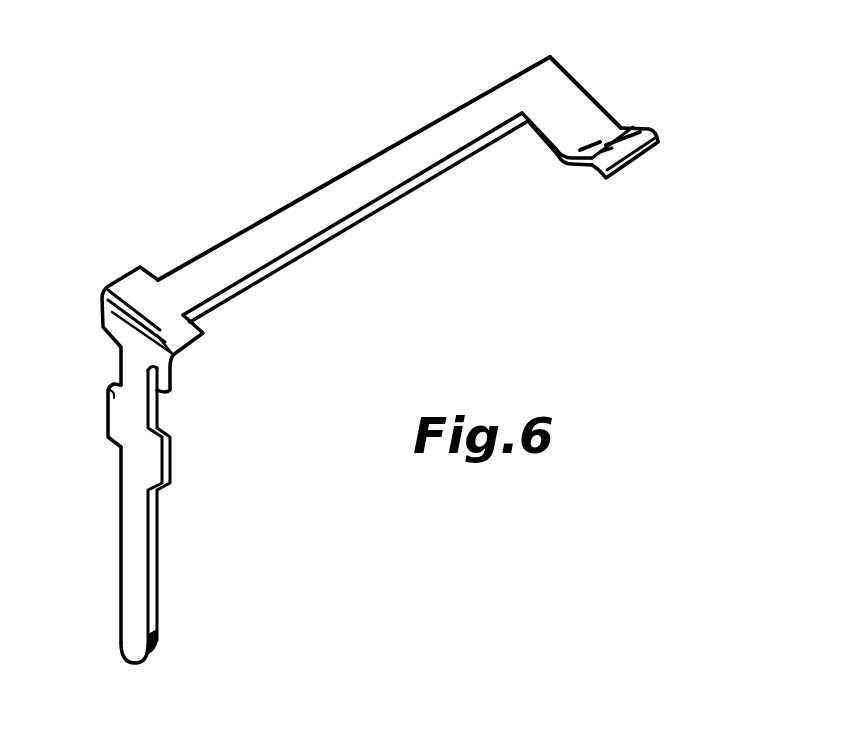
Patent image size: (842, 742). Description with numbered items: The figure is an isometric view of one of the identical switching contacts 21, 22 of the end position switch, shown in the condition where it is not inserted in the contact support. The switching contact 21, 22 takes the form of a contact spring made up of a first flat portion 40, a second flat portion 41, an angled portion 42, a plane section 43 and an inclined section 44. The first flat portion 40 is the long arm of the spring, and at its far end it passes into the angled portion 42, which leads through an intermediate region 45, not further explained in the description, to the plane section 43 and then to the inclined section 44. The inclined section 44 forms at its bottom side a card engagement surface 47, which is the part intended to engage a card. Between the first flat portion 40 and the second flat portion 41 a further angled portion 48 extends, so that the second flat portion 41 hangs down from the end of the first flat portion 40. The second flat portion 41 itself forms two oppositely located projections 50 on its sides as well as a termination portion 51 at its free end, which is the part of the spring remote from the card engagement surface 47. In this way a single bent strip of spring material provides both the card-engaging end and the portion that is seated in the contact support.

The contact element 21 is at (373, 360).
The contact element 22 is at (307, 186).
The arm 40 is at (277, 267).
The pin / terminal leg 41 is at (118, 535).
The bent end portion 42 is at (593, 93).
The contact hook 43 is at (563, 136).
The contact tab 44 is at (637, 127).
The bend 45 is at (533, 140).
The underside of contact end 47 is at (583, 170).
The rounded corner 48 is at (180, 358).
The retaining barbs 50 is at (113, 405).
The pin edge 51 is at (135, 597).